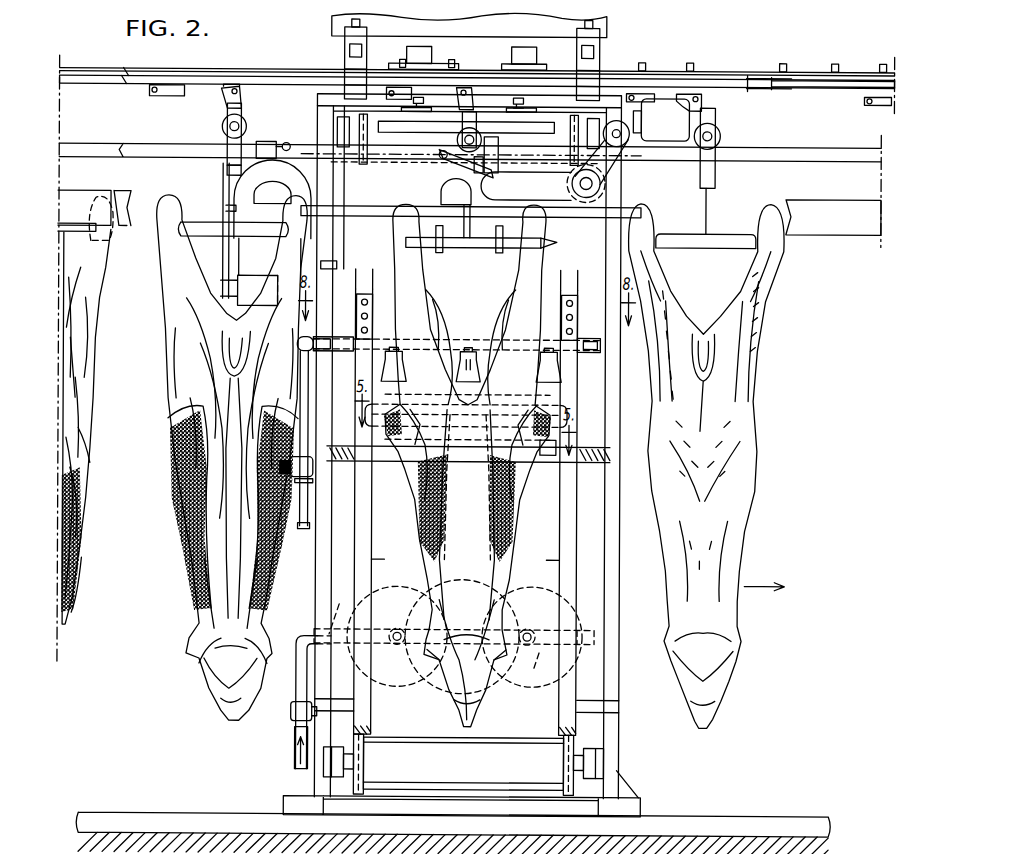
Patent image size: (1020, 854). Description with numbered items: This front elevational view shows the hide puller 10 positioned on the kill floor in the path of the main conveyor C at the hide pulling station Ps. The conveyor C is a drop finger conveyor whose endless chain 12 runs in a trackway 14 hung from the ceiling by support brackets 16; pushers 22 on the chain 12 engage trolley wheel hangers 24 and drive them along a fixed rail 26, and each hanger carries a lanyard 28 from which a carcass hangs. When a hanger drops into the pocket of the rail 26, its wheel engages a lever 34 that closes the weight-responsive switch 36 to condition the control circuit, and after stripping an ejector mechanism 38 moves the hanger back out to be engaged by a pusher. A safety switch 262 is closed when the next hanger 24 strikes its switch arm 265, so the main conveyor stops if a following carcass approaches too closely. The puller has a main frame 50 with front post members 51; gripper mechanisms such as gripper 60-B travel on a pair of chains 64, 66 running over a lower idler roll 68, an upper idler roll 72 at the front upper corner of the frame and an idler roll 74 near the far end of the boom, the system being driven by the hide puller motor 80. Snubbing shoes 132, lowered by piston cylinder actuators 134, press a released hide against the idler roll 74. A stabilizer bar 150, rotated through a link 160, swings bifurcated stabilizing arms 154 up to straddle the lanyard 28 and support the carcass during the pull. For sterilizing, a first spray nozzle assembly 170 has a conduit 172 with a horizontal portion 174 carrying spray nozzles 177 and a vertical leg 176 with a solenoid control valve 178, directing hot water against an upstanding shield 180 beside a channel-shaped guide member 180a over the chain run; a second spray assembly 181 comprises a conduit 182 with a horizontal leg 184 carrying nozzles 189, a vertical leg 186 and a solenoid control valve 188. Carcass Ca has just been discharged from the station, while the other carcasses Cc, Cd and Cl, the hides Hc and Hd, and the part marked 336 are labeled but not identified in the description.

The hide puller 10 is at (627, 672).
The endless chain 12 is at (802, 78).
The trackway 14 is at (728, 77).
The support brackets 16 is at (342, 50).
The pushers 22 is at (222, 97).
The trolley wheel hangers 24 is at (224, 116).
The fixed rail 26 is at (108, 144).
The lanyards 28 is at (200, 224).
The lever 34 is at (441, 163).
The switch 36 is at (526, 186).
The ejector mechanism 38 is at (523, 168).
The main frame structure 50 is at (617, 581).
The front post members 51 is at (317, 604).
The gripper mechanism 60-B is at (548, 454).
The chain 64 is at (371, 266).
The chain 66 is at (557, 268).
The lower idler roll 68 is at (412, 742).
The upper idler roll 72 is at (372, 241).
The idler roll 74 is at (392, 134).
The hide puller motor 80 is at (280, 179).
The snubbing shoes 132 is at (413, 104).
The piston cylinder actuators 134 is at (510, 53).
The bar 150 is at (552, 244).
The stabilizing arms 154 is at (495, 249).
The link 160 is at (328, 266).
The first spray nozzle assembly 170 is at (553, 350).
The conduit 172 is at (303, 528).
The lateral horizontally extending portion 174 is at (388, 340).
The vertical leg 176 is at (312, 492).
The spray nozzles 177 is at (385, 372).
The solenoid control valve 178 is at (302, 460).
The upstanding shield 180 is at (420, 539).
The channel-shaped guide member 180a is at (372, 568).
The second spray assembly 181 is at (536, 666).
The conduit 182 is at (296, 752).
The horizontal leg portion 184 is at (340, 609).
The vertical leg 186 is at (297, 686).
The solenoid control valve 188 is at (293, 714).
The nozzles 189 is at (396, 645).
The safety switch 262 is at (265, 143).
The switch arm 265 is at (286, 143).
The fitting 336 is at (290, 480).
The main conveyor C is at (246, 66).
The carcass Ca is at (748, 482).
The carcass Cc is at (218, 574).
The carcass Cd is at (72, 468).
The carcass Cl is at (467, 538).
The hide Hc is at (194, 518).
The hide Hd is at (68, 514).
The hide pulling station Ps is at (477, 305).